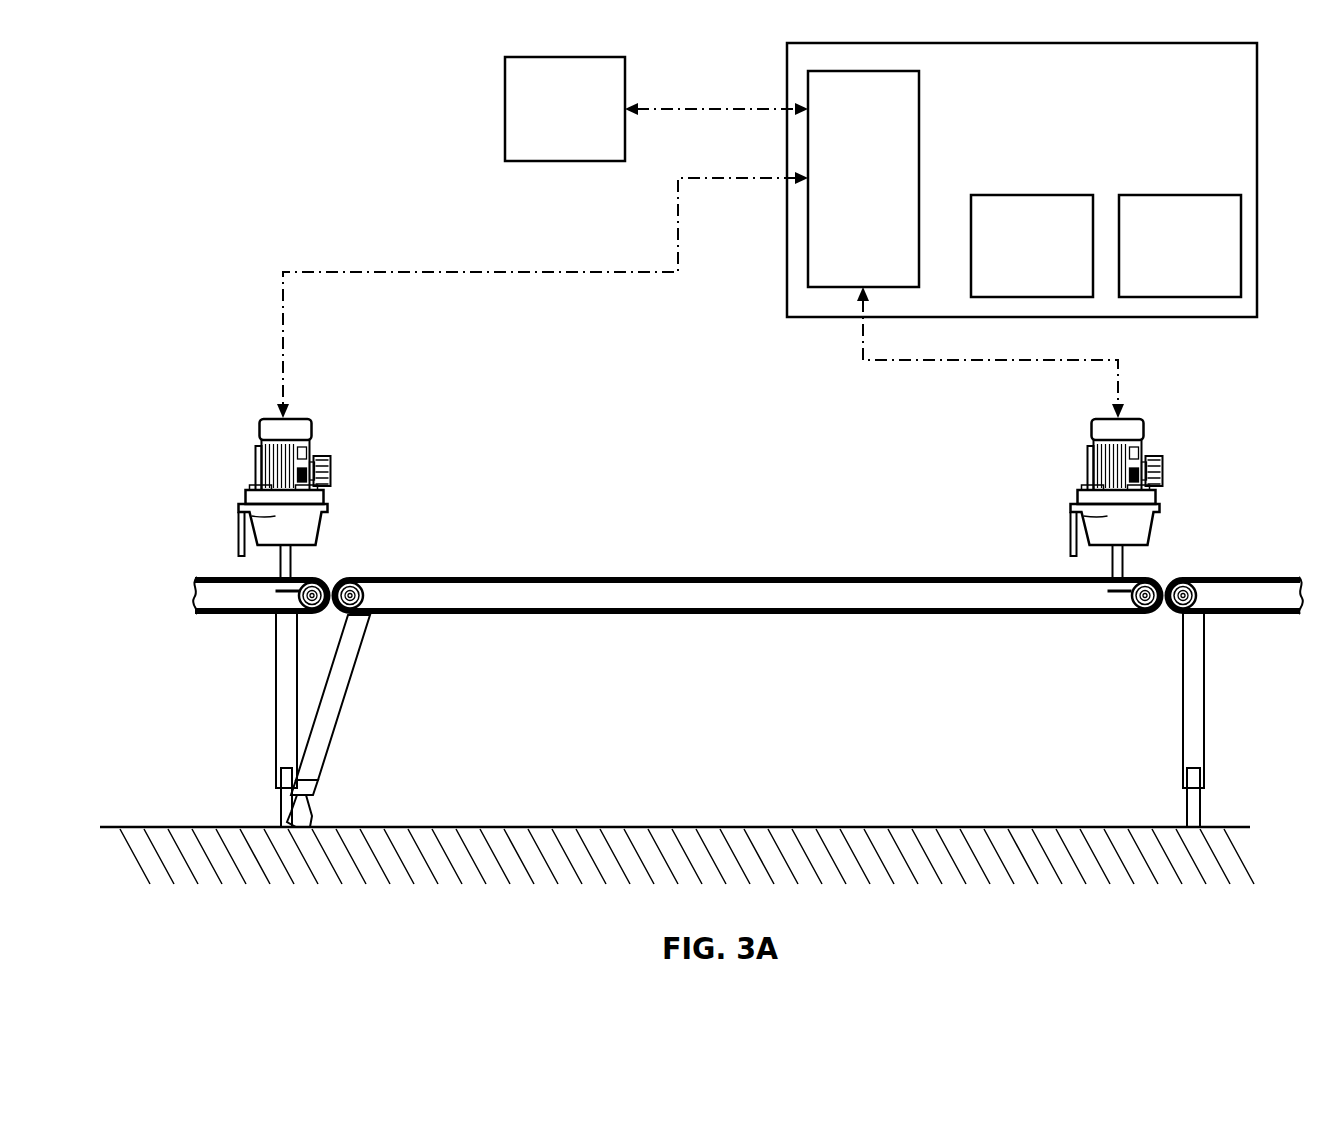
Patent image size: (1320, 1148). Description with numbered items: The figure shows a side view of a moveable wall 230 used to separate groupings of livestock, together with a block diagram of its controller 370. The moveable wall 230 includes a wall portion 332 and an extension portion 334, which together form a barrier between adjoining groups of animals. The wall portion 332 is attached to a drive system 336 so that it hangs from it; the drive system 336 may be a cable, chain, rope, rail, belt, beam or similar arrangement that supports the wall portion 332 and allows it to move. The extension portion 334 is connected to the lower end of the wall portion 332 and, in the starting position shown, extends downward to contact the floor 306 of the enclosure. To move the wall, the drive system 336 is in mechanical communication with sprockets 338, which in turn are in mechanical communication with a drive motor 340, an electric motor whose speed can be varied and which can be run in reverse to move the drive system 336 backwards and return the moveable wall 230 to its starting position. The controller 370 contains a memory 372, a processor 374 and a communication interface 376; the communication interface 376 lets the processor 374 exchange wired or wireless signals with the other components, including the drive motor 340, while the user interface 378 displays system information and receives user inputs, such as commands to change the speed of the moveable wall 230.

The moveable wall 230 is at (296, 88).
The floor 306 is at (622, 826).
The wall portion 332 is at (276, 697).
The extension portion 334 is at (281, 803).
The drive system 336 is at (200, 578).
The sprockets 338 is at (314, 580).
The drive motor 340 is at (265, 417).
The controller 370 is at (1022, 180).
The memory 372 is at (1032, 246).
The processor 374 is at (1180, 246).
The communication interface 376 is at (863, 179).
The user interface 378 is at (565, 109).